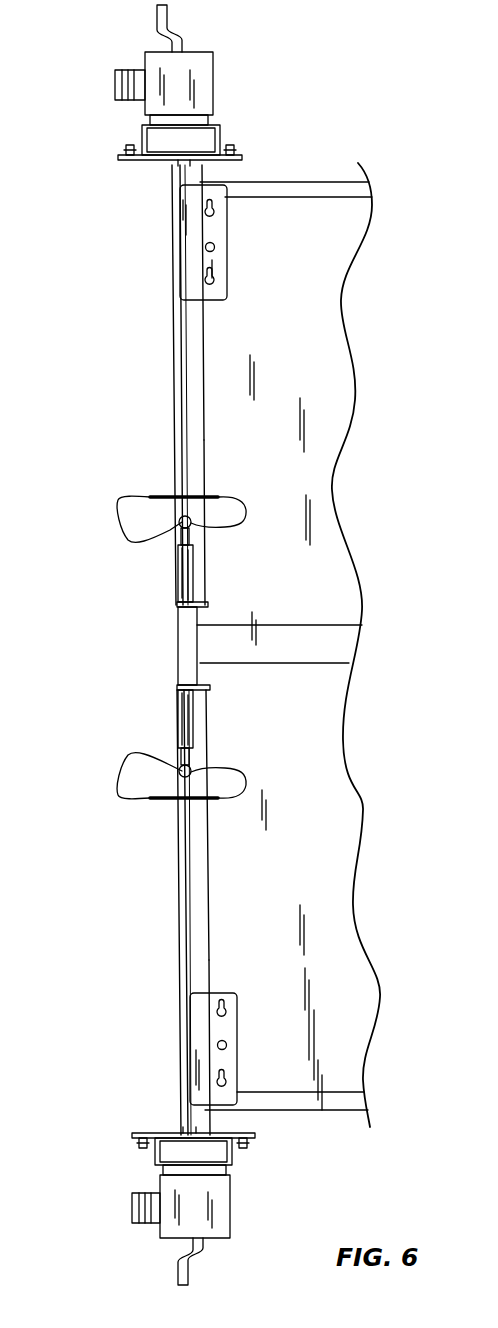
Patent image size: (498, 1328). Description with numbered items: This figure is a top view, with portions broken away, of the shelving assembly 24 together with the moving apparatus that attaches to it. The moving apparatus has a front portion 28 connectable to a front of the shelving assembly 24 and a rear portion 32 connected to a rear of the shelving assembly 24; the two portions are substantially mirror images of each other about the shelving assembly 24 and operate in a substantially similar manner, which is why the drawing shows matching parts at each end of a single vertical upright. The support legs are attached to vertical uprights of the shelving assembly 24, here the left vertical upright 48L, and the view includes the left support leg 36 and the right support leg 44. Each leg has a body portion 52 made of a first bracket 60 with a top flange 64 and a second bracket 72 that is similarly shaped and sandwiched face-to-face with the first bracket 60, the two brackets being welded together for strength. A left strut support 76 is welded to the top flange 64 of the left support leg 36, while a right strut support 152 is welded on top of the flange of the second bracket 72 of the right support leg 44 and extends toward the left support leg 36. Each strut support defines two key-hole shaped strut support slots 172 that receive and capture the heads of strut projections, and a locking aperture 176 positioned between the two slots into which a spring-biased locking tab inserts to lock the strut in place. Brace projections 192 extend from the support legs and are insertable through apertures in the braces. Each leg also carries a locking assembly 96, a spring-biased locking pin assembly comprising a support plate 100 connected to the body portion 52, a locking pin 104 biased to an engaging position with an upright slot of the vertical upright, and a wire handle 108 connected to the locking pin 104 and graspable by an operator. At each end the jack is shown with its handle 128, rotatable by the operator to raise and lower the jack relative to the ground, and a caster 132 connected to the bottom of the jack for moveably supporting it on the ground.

The shelving assembly 24 is at (340, 740).
The front portion 28 is at (180, 912).
The rear portion 32 is at (167, 650).
The left support leg 36 is at (212, 944).
The right support leg 44 is at (205, 424).
The left vertical upright 48L is at (180, 655).
The body portion 52 is at (197, 348).
The first bracket 60 is at (181, 460).
The top flange 64 is at (200, 478).
The second bracket 72 is at (188, 838).
The left strut support 76 is at (230, 1036).
The locking assembly 96 is at (198, 576).
The support plate 100 is at (205, 607).
The locking pin 104 is at (190, 540).
The wire handle 108 is at (120, 522).
The handle 128 is at (172, 28).
The caster 132 is at (140, 70).
The right strut support 152 is at (196, 228).
The strut support slots 172 is at (215, 211).
The locking aperture 176 is at (215, 247).
The brace projections 192 is at (125, 148).